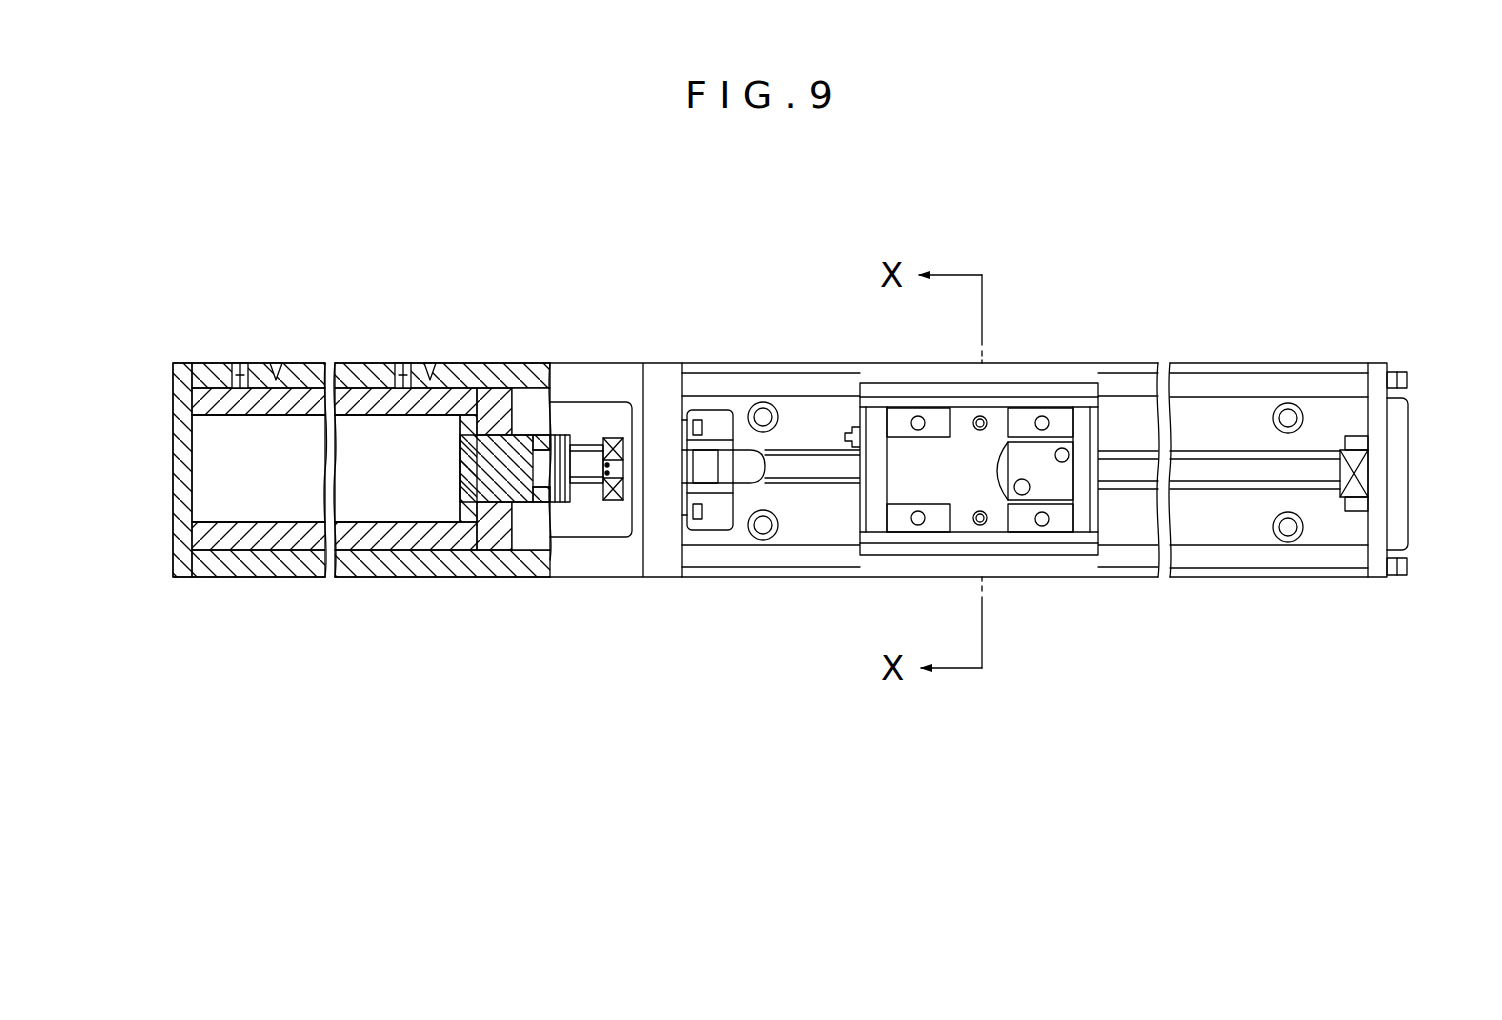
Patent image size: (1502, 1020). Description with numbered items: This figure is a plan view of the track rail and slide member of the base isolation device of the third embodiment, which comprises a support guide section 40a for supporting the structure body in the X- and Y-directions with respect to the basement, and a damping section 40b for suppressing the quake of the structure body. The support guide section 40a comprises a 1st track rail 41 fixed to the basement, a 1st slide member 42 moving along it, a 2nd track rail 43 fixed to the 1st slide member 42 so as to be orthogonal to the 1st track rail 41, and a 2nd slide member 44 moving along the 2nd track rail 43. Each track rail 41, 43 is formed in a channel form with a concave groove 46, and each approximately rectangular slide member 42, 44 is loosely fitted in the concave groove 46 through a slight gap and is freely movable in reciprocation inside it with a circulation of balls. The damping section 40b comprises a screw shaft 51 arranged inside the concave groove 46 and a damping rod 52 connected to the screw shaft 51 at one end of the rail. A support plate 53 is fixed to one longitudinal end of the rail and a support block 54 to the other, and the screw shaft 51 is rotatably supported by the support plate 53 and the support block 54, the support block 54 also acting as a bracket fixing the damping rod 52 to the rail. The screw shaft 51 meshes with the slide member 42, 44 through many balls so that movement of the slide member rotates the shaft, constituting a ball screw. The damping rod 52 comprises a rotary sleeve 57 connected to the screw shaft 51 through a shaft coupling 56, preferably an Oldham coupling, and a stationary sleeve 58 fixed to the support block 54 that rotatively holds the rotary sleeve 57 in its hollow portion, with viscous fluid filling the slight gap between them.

The support guide section 40a is at (1248, 336).
The damping section 40b is at (432, 348).
The 1st track rail 41 is at (778, 363).
The 2nd track rail 43 is at (920, 416).
The 1st slide member 42 is at (997, 521).
The 2nd slide member 44 is at (984, 535).
The concave groove 46 is at (1205, 528).
The screw shaft 51 is at (1329, 476).
The damping rod 52 is at (364, 360).
The support plate 53 is at (1394, 458).
The support block 54 is at (597, 363).
The shaft coupling 56 is at (550, 560).
The rotary sleeve 57 is at (255, 538).
The stationary sleeve 58 is at (293, 363).